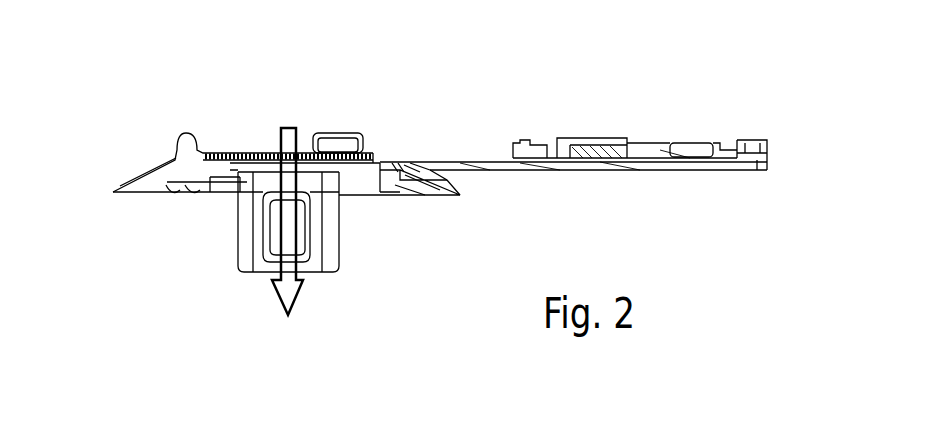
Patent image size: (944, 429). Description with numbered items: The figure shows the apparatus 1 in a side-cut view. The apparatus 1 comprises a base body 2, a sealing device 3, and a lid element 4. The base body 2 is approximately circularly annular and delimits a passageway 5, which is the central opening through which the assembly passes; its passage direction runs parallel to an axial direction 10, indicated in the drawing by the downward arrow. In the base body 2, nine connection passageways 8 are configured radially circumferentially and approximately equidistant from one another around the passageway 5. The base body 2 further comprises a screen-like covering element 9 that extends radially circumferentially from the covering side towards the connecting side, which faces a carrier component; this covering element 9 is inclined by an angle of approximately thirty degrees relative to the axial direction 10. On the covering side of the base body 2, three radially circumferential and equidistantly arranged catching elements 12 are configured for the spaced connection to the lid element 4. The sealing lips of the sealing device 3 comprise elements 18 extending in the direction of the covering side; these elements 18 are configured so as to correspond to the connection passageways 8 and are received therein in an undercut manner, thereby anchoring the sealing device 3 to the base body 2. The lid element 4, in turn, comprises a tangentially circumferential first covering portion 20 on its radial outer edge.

The apparatus 1 is at (647, 45).
The base body 2 is at (165, 168).
The sealing device 3 is at (403, 190).
The lid element 4 is at (660, 160).
The passageway 5 is at (281, 252).
The connection passageways 8 is at (410, 160).
The covering element 9 is at (448, 180).
The axial direction 10 is at (297, 268).
The catching elements 12 is at (340, 132).
The elements 18 is at (402, 160).
The first covering portion 20 is at (763, 143).